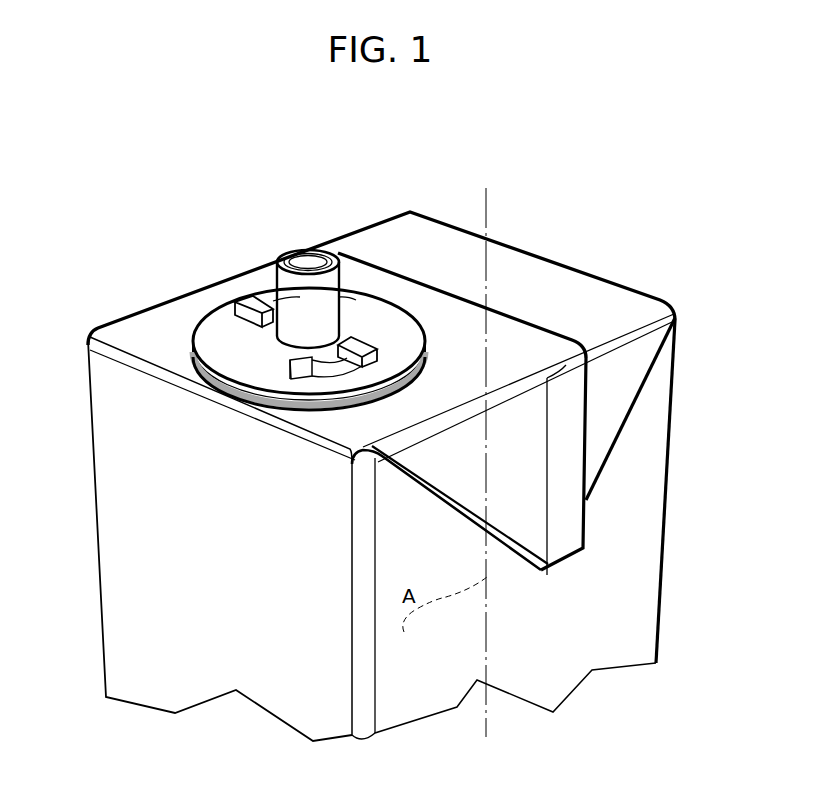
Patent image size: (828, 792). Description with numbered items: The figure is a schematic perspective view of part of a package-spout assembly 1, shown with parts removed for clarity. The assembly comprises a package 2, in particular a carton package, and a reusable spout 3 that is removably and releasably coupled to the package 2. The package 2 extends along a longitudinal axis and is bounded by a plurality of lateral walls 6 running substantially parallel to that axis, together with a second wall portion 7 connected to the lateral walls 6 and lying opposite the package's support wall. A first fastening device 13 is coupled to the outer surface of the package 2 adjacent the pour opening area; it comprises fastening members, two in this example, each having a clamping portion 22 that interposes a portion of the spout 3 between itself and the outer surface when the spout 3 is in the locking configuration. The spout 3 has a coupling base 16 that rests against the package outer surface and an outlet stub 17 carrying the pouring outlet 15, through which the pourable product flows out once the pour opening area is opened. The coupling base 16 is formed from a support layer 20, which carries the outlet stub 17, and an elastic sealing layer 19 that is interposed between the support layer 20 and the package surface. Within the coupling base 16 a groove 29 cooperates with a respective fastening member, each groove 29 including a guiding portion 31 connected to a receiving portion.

The package-spout assembly 1 is at (626, 192).
The package 2 is at (531, 243).
The reusable spout 3 is at (380, 268).
The lateral walls 6 is at (108, 468).
The second wall portion 7 is at (605, 292).
The first fastening device 13 is at (270, 253).
The pouring outlet 15 is at (301, 264).
The coupling base 16 is at (345, 379).
The outlet stub 17 is at (333, 278).
The sealing layer 19 is at (216, 393).
The support layer 20 is at (243, 386).
The clamping portion 22 is at (252, 301).
The groove 29 is at (330, 394).
The guiding portion 31 is at (338, 372).